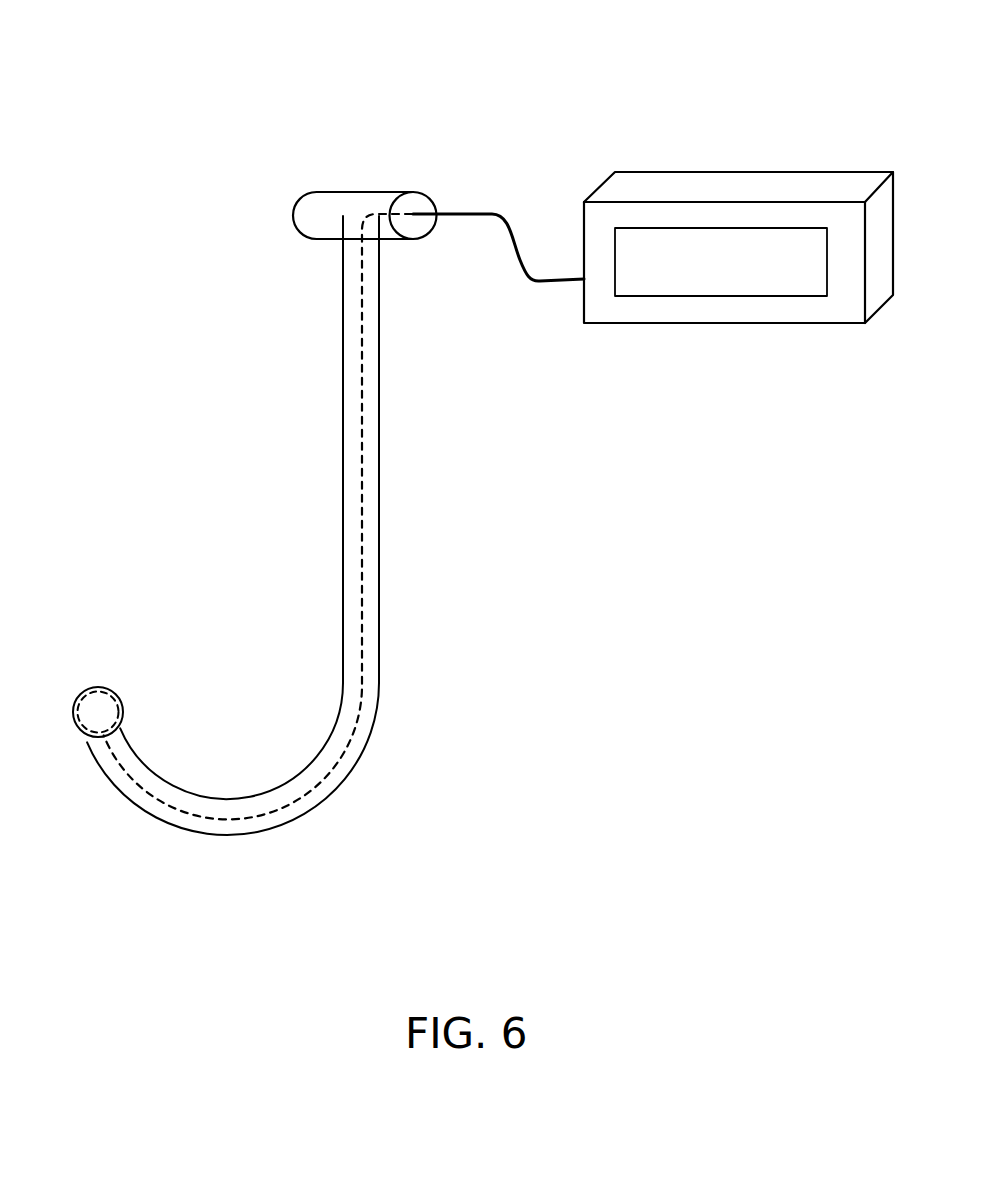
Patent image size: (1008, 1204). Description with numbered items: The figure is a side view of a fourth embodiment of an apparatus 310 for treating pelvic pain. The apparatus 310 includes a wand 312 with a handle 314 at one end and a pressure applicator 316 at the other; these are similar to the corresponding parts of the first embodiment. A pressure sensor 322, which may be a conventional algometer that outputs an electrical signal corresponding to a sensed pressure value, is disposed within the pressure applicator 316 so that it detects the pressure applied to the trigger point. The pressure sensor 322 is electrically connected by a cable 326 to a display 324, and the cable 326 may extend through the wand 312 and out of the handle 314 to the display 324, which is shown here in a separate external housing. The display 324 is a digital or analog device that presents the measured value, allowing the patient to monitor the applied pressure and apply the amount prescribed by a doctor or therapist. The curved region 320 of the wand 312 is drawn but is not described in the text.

The apparatus 310 is at (275, 108).
The wand 312 is at (342, 440).
The handle 314 is at (373, 192).
The pressure applicator 316 is at (102, 688).
The curved distal (coude) portion 320 is at (336, 784).
The pressure sensor 322 is at (118, 700).
The display 324 is at (716, 172).
The cable 326 is at (365, 519).